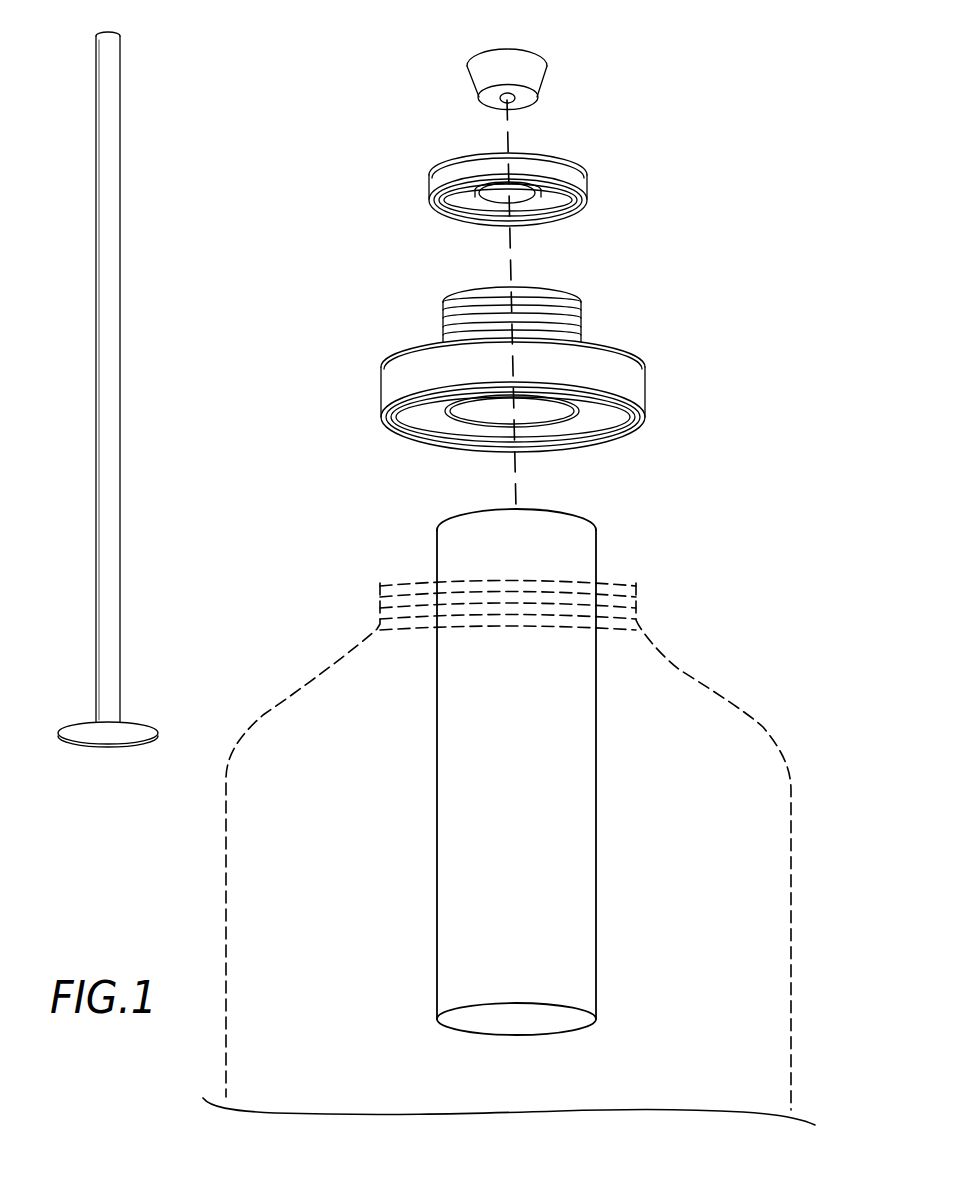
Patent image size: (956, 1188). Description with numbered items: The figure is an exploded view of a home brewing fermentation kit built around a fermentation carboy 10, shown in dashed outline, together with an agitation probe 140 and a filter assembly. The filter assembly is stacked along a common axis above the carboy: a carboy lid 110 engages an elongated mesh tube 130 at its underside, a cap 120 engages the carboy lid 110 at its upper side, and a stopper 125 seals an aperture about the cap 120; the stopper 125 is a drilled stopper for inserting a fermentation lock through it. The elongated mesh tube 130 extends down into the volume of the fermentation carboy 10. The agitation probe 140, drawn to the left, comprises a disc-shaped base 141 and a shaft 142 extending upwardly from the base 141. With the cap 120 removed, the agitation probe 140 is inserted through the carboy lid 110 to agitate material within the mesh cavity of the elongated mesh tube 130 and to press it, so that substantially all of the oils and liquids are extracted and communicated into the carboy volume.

The fermentation carboy 10 is at (762, 724).
The carboy lid 110 is at (668, 403).
The cap 120 is at (610, 193).
The stopper 125 is at (575, 70).
The elongated mesh tube 130 is at (616, 545).
The agitation probe 140 is at (127, 420).
The base 141 is at (118, 740).
The shaft 142 is at (115, 307).